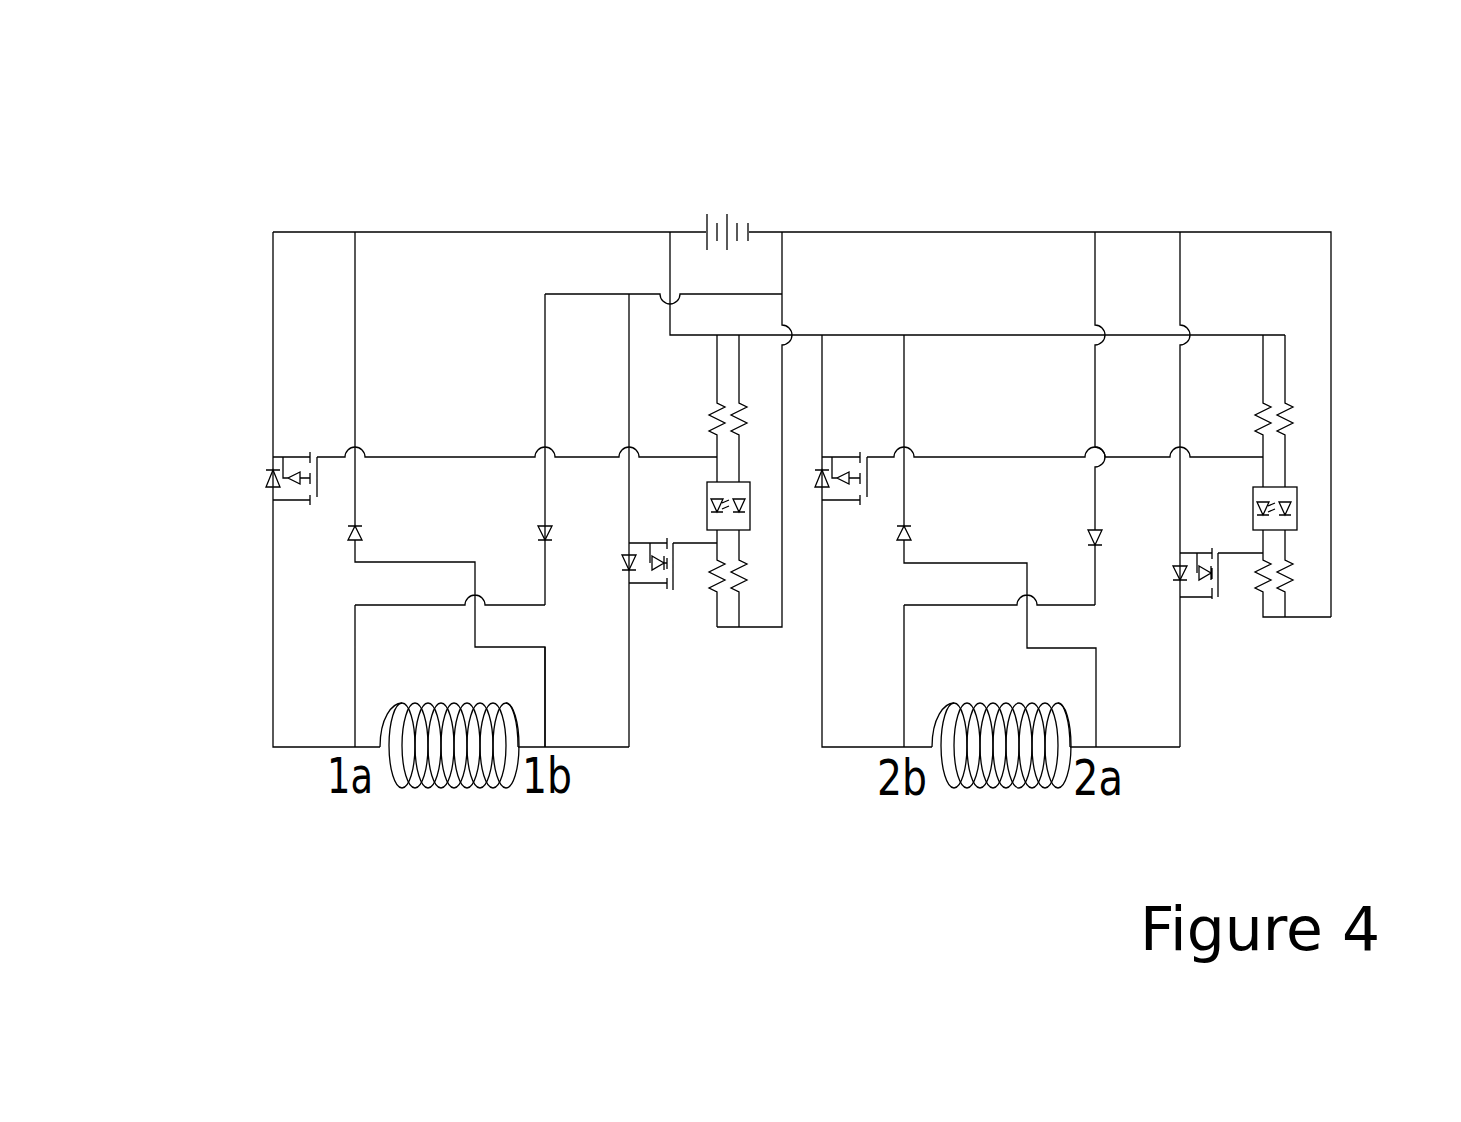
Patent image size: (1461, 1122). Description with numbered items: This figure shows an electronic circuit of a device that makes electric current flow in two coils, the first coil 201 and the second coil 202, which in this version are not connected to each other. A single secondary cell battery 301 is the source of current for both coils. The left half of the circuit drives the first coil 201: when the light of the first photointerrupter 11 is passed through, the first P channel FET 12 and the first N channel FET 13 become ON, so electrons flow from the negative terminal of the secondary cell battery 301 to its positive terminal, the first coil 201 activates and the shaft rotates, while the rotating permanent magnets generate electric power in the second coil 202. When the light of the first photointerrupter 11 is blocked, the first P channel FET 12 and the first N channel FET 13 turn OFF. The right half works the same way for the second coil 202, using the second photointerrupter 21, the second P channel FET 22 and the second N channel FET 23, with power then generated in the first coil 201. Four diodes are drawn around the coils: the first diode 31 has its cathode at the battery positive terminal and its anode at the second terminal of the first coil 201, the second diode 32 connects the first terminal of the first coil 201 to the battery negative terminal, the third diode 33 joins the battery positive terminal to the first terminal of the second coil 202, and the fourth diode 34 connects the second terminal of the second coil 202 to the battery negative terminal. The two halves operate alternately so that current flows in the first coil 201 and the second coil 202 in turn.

The secondary cell battery 301 is at (732, 205).
The first photointerrupter 11 is at (692, 483).
The second photointerrupter 21 is at (1303, 488).
The first P channel FET 12 is at (287, 447).
The first N channel FET 13 is at (648, 588).
The second P channel FET 22 is at (845, 450).
The second N channel FET 23 is at (1200, 540).
The first diode 31 is at (370, 517).
The second diode 32 is at (522, 525).
The third diode 33 is at (915, 522).
The fourth diode 34 is at (1107, 520).
The first coil 201 is at (448, 802).
The second coil 202 is at (1003, 802).